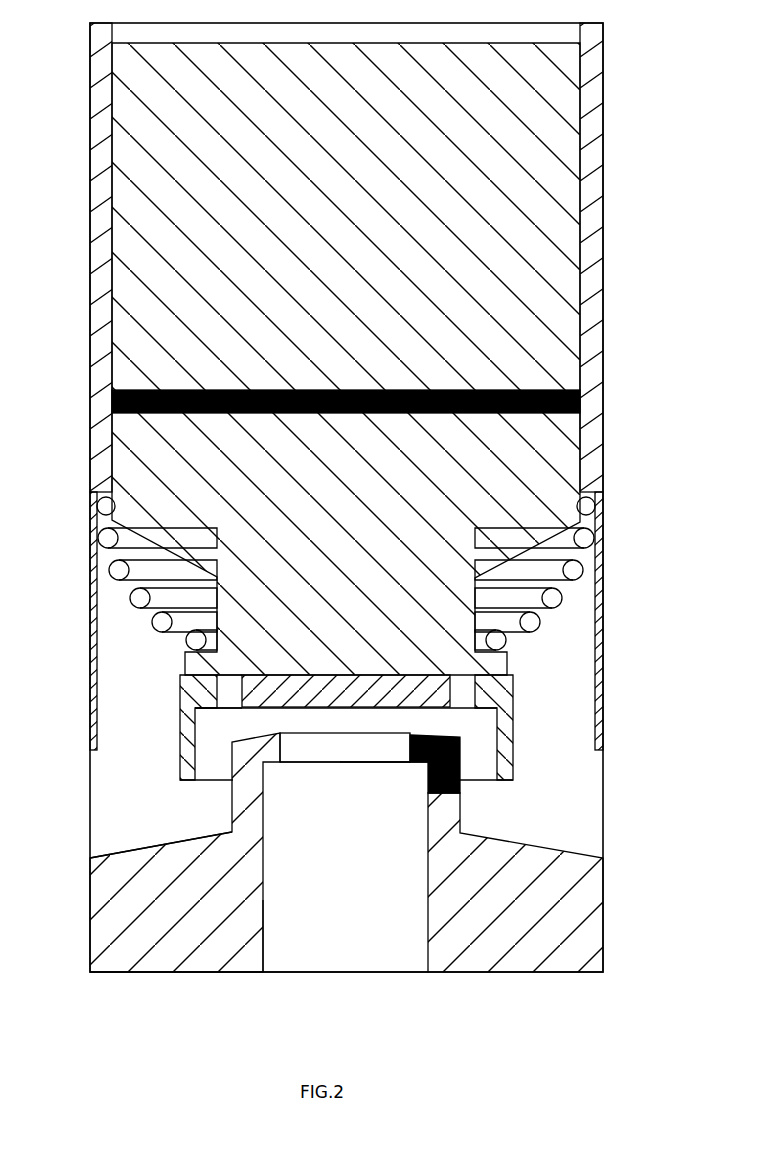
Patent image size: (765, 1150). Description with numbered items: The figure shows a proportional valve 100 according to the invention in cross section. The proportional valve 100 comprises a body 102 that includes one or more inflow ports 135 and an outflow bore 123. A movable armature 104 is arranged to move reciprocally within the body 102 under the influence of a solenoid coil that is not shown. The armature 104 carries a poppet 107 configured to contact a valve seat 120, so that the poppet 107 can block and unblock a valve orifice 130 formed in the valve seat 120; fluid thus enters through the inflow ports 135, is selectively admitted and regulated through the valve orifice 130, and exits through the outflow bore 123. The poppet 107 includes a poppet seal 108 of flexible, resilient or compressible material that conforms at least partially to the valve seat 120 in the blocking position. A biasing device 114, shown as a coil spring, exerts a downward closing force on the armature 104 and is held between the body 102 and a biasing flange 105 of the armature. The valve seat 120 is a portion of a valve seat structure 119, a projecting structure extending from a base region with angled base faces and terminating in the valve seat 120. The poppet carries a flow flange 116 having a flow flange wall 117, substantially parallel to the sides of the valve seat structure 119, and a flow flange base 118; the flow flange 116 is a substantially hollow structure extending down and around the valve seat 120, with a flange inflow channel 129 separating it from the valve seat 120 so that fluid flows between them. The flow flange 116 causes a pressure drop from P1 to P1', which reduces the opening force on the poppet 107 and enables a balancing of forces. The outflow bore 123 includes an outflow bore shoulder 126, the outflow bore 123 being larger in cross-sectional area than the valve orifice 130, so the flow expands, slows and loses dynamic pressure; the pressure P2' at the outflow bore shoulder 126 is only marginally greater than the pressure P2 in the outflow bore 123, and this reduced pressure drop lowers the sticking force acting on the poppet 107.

The proportional valve 100 is at (105, 1008).
The body 102 is at (603, 143).
The movable armature 104 is at (580, 401).
The biasing flange 105 is at (505, 650).
The poppet 107 is at (76, 622).
The poppet seal 108 is at (440, 708).
The biasing device 114 is at (580, 565).
The flow flange 116 is at (165, 686).
The flow flange wall 117 is at (528, 712).
The flow flange base 118 is at (528, 675).
The valve seat structure 119 is at (466, 745).
The valve seat 120 is at (253, 737).
The outflow bore 123 is at (278, 958).
The outflow bore shoulder 126 is at (417, 770).
The flange inflow channel 129 is at (207, 770).
The valve orifice 130 is at (340, 748).
The inflow port 135 is at (145, 792).
The inlet pressure P1 is at (131, 863).
The reduced pressure inside flow flange P1' is at (180, 724).
The outflow bore pressure P2 is at (277, 968).
The pressure at outflow bore shoulder P2' is at (375, 793).